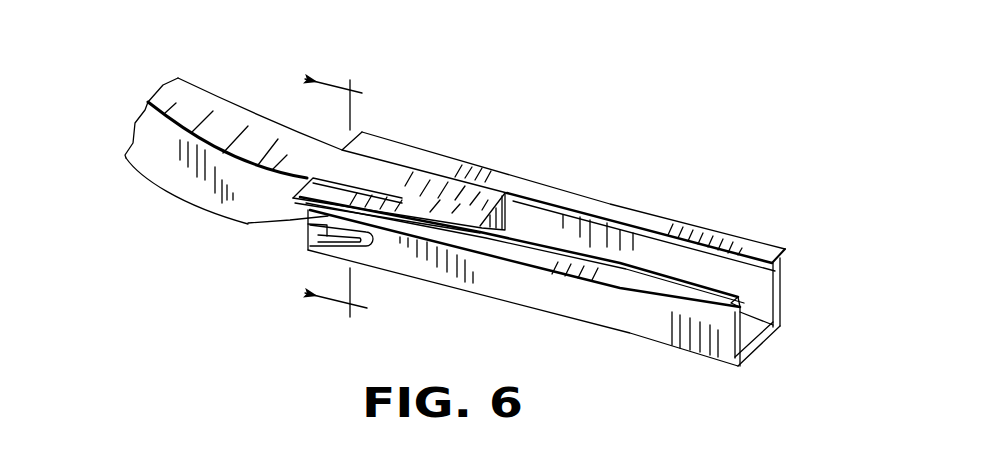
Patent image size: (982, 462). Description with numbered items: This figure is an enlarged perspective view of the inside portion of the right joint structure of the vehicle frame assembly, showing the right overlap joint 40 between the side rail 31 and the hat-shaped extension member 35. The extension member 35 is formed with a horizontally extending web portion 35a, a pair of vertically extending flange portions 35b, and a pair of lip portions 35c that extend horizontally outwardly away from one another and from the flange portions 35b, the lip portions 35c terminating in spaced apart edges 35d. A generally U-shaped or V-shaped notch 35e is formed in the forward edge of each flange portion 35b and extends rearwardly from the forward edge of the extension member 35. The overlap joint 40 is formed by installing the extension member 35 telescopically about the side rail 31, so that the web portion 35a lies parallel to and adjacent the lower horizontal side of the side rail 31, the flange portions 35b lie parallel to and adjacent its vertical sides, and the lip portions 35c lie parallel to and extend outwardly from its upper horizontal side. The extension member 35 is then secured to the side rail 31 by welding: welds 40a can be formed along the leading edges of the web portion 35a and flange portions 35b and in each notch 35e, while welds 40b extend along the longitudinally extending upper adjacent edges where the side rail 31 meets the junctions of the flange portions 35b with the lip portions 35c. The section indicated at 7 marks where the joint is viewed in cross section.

The side rail 31 is at (220, 128).
The overlap joint 40 is at (487, 156).
The welds 40a is at (250, 222).
The welds 40b is at (402, 198).
The extension member 35 is at (674, 215).
The horizontally extending web portion 35a is at (760, 345).
The vertically extending flange portions 35b is at (781, 292).
The lip portions 35c is at (583, 280).
The edges 35d is at (727, 230).
The notch 35e is at (307, 230).
The section line 7- 7 is at (339, 200).